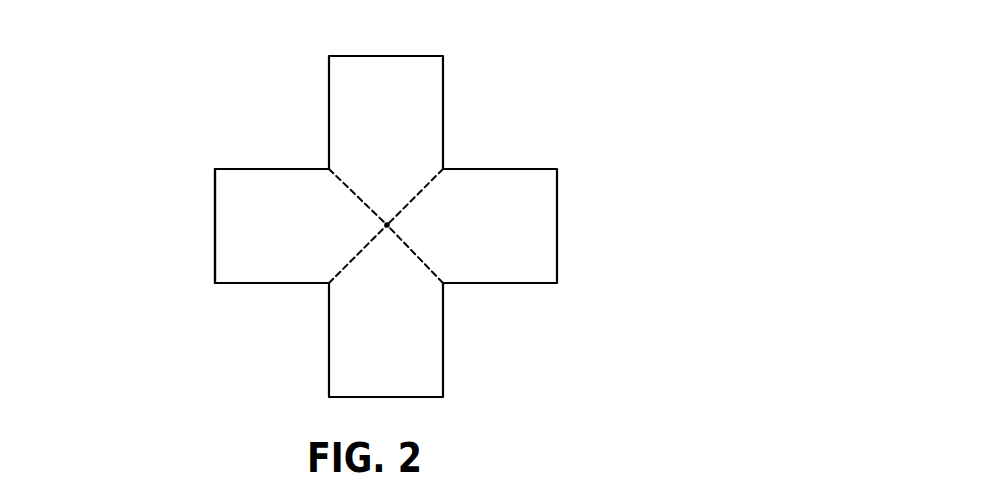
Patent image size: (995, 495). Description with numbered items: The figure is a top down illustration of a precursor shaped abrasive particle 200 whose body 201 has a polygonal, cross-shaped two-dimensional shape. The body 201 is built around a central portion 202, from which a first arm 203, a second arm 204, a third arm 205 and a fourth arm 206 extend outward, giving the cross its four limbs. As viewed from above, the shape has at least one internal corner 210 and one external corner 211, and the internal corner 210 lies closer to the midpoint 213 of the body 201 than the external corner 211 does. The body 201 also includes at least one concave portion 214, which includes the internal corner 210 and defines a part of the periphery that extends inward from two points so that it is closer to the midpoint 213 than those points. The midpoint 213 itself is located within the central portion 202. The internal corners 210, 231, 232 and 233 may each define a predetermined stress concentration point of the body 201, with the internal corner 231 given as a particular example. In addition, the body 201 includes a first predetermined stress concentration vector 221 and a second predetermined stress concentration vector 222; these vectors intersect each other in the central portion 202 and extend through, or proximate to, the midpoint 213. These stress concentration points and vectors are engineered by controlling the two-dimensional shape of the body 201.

The precursor shaped abrasive particle 200 is at (210, 133).
The body 201 is at (243, 248).
The central portion 202 is at (358, 201).
The first arm 203 is at (232, 211).
The second arm 204 is at (353, 90).
The third arm 205 is at (528, 231).
The fourth arm 206 is at (413, 384).
The internal corner 210 is at (443, 169).
The external corner 211 is at (445, 56).
The midpoint 213 is at (394, 216).
The concave portion 214 is at (491, 117).
The first predetermined stress concentration vector 221 is at (413, 250).
The second predetermined stress concentration vector 222 is at (337, 276).
The internal corner 231 is at (443, 284).
The internal corner 232 is at (329, 284).
The internal corner 233 is at (329, 169).